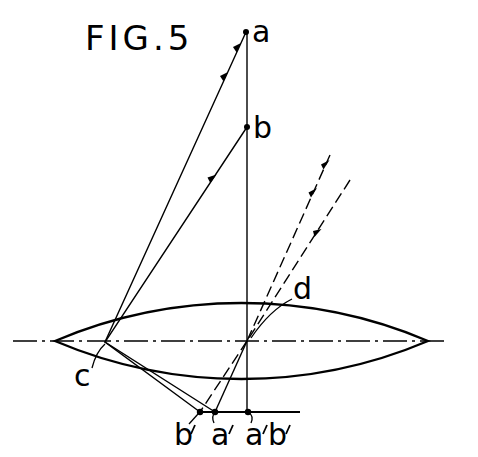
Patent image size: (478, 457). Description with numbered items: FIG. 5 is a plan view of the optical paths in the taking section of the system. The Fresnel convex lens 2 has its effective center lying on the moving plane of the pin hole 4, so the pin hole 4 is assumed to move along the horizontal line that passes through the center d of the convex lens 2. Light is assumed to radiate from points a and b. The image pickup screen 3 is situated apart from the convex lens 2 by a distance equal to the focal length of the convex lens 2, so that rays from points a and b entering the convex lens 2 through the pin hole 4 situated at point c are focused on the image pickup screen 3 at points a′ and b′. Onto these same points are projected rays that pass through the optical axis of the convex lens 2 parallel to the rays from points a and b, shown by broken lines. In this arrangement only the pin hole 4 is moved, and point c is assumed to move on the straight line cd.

The convex lens 2 is at (245, 341).
The image pickup screen 3 is at (260, 415).
The pin hole 4 is at (102, 330).